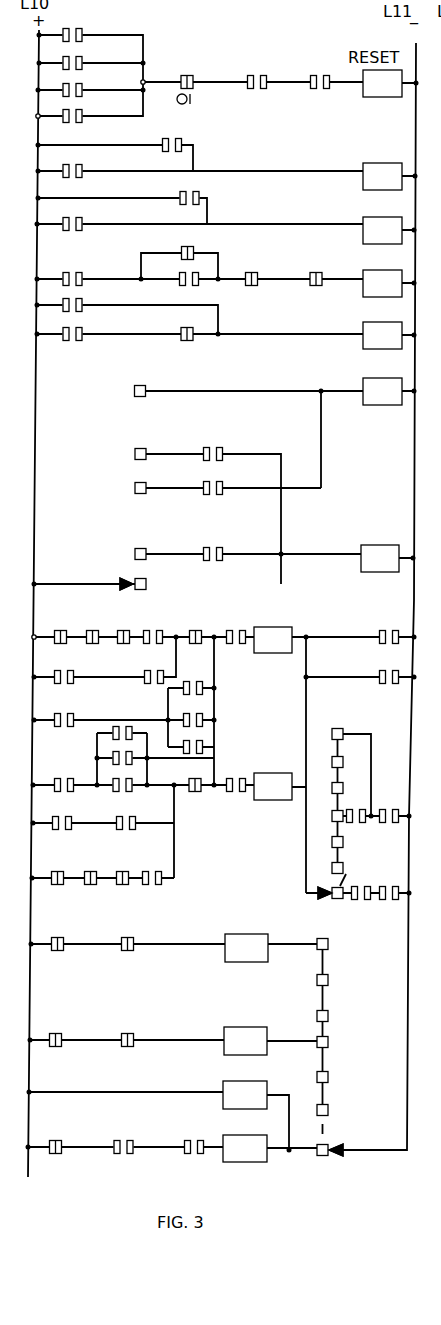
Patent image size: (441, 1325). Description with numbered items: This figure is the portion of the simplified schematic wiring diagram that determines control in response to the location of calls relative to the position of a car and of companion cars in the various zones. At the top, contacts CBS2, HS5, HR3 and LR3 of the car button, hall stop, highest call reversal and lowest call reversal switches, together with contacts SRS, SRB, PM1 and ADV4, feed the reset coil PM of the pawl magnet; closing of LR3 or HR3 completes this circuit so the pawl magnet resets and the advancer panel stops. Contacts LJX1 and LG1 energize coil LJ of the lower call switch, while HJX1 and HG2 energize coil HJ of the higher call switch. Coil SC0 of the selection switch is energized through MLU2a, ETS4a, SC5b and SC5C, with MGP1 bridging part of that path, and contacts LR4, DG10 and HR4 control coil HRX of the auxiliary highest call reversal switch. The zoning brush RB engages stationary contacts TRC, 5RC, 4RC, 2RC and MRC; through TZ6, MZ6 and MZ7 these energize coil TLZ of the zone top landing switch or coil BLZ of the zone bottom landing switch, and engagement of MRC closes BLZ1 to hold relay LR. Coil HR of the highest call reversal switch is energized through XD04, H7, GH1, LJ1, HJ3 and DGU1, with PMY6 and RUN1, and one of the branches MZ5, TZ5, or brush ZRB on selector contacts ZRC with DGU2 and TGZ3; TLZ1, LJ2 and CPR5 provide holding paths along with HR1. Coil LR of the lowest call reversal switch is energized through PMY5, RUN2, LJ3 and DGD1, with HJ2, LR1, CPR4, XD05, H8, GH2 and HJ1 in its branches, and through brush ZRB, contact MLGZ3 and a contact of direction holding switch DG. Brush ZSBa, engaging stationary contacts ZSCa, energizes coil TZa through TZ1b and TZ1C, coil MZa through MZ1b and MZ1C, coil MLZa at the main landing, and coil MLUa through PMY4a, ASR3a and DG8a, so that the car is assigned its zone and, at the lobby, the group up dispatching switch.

The car button switch contact CBS2 is at (58, 20).
The hall stop switch contact HS5 is at (77, 62).
The highest call reversal switch contact HR3 is at (77, 89).
The lowest call reversal switch contact LR3 is at (77, 115).
The start reset switch contact SRS is at (199, 60).
The start reset switch contact SRB is at (203, 100).
The pawl magnet contact PM1 is at (269, 60).
The advanced advancer switch contact ADV4 is at (336, 60).
The reset coil of pawl magnet PM is at (382, 83).
The lower hall call switch contact LJX1 is at (173, 138).
The lower car call switch contact LG1 is at (76, 168).
The lower call switch coil LJ is at (382, 176).
The higher hall call switch contact HJX1 is at (192, 192).
The higher car call switch contact HG2 is at (75, 220).
The higher call switch coil HJ is at (382, 230).
The MG set preference switch contact MGP1 is at (186, 247).
The main landing up switch contact MLU2a is at (46, 258).
The excitation time switch contact ETS4a is at (193, 284).
The selection switch contact of car b SC5b is at (240, 274).
The selection switch contact of car c SC5C is at (302, 265).
The selection switch coil SC0 is at (382, 283).
The lowest call reversal switch contact LR4 is at (76, 300).
The direction holding switch contact DG10 is at (76, 327).
The highest call reversal switch contact HR4 is at (160, 328).
The auxiliary highest call reversal switch coil HRX is at (382, 335).
The top zone selector floor bar contact TRC is at (160, 371).
The zone top landing switch coil TLZ is at (382, 391).
The selector floor bar contact for fifth zone 5RC is at (162, 436).
The top zone switch contact TZ6 is at (230, 436).
The selector floor bar contact for fourth zone 4RC is at (161, 471).
The middle zone switch contact MZ6 is at (215, 481).
The selector floor bar contact for second zone 2RC is at (161, 536).
The middle zone switch contact MZ7 is at (215, 547).
The zone bottom landing switch coil BLZ is at (380, 558).
The zoning brush RB is at (90, 566).
The main landing stationary contact MRC is at (160, 566).
The MG start and door open switch contact XD04 is at (40, 621).
The field and brake switch contact H7 is at (105, 604).
The door close limit switch contact GH1 is at (141, 624).
The lower call switch contact LJ1 is at (174, 606).
The higher call switch contact HJ3 is at (213, 624).
The auxiliary up direction switch contact DGU1 is at (265, 606).
The highest call reversal switch coil HR is at (273, 640).
The middle zone switch contact MZ5 is at (391, 620).
The top zone switch contact TZ5 is at (389, 660).
The pawl magnet relay contact PMY6 is at (87, 658).
The running relay contact RUN1 is at (165, 658).
The zone top landing switch contact TLZ1 is at (203, 684).
The lower call switch contact LJ2 is at (187, 712).
The call pickup relay contact CPR5 is at (200, 743).
The highest call reversal switch contact HR1 is at (70, 701).
The zone bottom landing switch contact BLZ1 is at (144, 704).
The higher call switch contact HJ2 is at (118, 753).
The lowest call reversal switch contact LR1 is at (72, 766).
The call pickup relay contact CPR4 is at (133, 781).
The lower call switch contact LJ3 is at (218, 808).
The auxiliary down direction switch contact DGD1 is at (222, 778).
The lowest call reversal switch coil LR is at (273, 786).
The pawl magnet relay contact PMY5 is at (84, 803).
The running relay contact RUN2 is at (104, 803).
The MG start and door open switch contact XD05 is at (78, 857).
The field and brake switch contact H8 is at (98, 885).
The door close limit switch contact GH2 is at (145, 857).
The higher call switch contact HJ1 is at (162, 885).
The zone reversal selector floor bar contacts ZRC is at (332, 728).
The auxiliary up direction switch contact DGU2 is at (380, 810).
The group top zone relay contact TGZ3 is at (348, 819).
The zone reversal brush ZRB is at (316, 898).
The group main landing zone relay contact MLGZ3 is at (346, 897).
The direction holding switch contact DG is at (393, 905).
The top zone switch contact of car b TZ1b is at (86, 927).
The top zone switch contact of car c TZ1C is at (168, 927).
The top zone switch coil TZa is at (246, 948).
The zone selector floor bar contacts ZSCa is at (318, 942).
The middle zone switch contact of car b MZ1b is at (84, 1017).
The middle zone switch contact of car c MZ1C is at (160, 1017).
The middle zone switch coil MZa is at (245, 1041).
The main landing zone switch coil MLZa is at (235, 1081).
The pawl magnet relay contact PMY4a is at (90, 1129).
The automatic starting switch contact ASR3a is at (140, 1170).
The direction holding switch contact DG8a is at (185, 1146).
The main landing up switch coil MLUa is at (233, 1162).
The zone selector brush ZSBa is at (344, 1158).